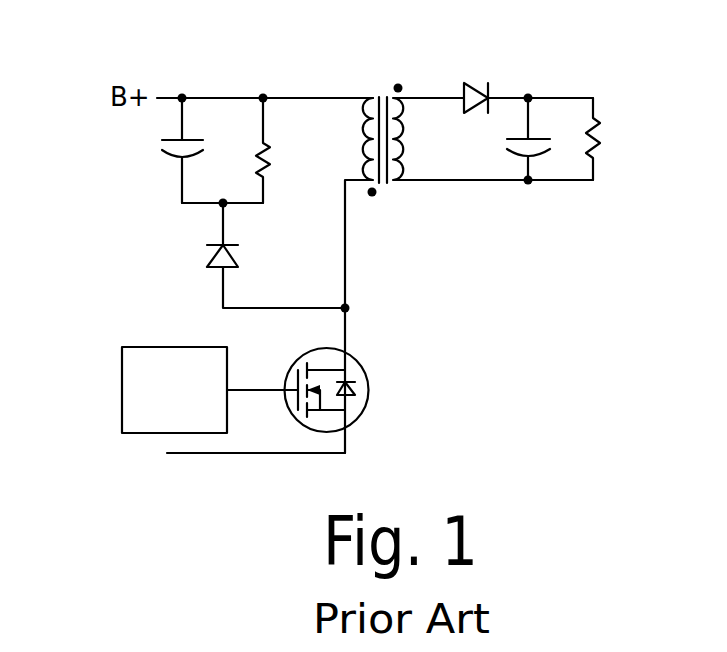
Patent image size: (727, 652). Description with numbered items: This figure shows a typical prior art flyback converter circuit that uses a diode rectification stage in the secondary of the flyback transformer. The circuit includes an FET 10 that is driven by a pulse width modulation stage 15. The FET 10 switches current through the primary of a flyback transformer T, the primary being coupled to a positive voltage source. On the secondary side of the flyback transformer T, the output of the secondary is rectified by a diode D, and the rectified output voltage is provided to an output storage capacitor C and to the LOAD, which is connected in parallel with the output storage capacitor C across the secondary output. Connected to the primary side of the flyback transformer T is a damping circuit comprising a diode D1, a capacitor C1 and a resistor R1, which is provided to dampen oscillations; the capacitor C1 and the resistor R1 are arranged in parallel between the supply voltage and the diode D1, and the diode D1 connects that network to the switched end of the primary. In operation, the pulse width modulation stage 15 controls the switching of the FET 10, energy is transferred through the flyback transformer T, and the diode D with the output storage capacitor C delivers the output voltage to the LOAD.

The FET 10 is at (368, 390).
The pulse width modulation stage 15 is at (133, 363).
The capacitor C1 is at (164, 150).
The resistor R1 is at (284, 150).
The diode D1 is at (276, 255).
The flyback transformer T is at (432, 233).
The diode D is at (486, 97).
The output storage capacitor C is at (532, 162).
The load LOAD is at (629, 139).